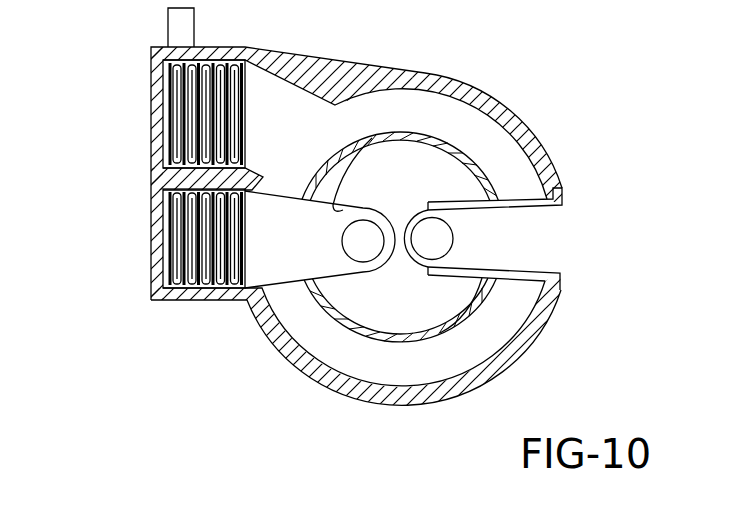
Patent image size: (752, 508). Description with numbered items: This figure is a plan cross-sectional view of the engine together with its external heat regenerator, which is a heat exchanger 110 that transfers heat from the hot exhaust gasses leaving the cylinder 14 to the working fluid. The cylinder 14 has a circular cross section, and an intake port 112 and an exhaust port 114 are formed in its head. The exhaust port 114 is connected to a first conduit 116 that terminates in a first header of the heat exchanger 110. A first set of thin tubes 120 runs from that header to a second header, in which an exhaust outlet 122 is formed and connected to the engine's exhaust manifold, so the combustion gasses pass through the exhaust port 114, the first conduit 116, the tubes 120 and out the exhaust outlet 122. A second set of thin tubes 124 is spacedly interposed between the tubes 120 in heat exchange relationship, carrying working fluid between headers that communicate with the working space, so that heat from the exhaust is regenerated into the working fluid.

The heat exchanger 110 is at (126, 142).
The intake port 112 is at (537, 209).
The exhaust port 114 is at (362, 140).
The first conduit 116 is at (283, 273).
The first set of thin tubes 120 is at (163, 240).
The exhaust outlet 122 is at (166, 30).
The second set of thin tubes 124 is at (163, 80).
The hollow cylinder 14 is at (433, 168).